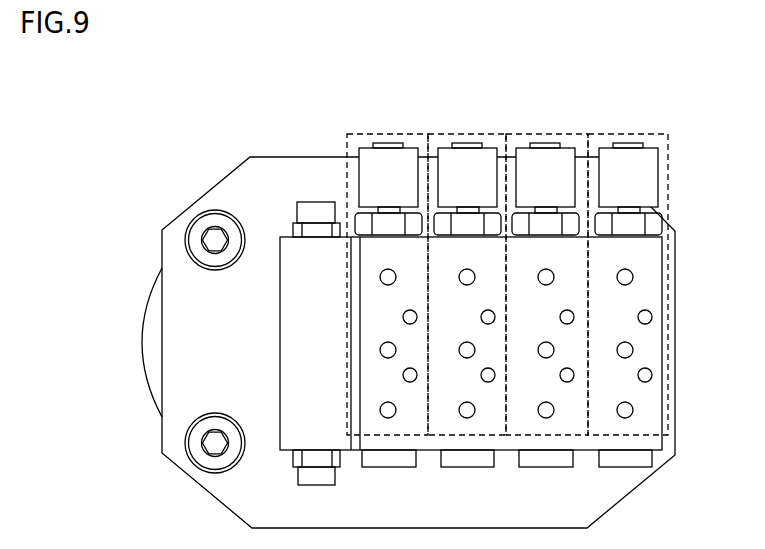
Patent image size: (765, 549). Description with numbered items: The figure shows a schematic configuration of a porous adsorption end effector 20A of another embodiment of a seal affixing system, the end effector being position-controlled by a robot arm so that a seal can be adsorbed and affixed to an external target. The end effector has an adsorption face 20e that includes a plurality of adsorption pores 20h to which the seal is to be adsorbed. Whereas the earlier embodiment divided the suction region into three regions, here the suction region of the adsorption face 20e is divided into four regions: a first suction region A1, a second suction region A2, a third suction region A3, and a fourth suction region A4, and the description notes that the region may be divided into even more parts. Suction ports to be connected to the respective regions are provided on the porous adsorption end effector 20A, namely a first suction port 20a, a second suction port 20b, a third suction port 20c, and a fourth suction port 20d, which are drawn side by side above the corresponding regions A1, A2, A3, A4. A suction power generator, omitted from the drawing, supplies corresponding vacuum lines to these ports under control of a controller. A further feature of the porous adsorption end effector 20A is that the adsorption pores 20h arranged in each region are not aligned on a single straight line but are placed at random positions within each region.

The porous adsorption end effector 20A is at (188, 332).
The first suction port 20a is at (613, 166).
The second suction port 20b is at (522, 164).
The third suction port 20c is at (445, 164).
The fourth suction port 20d is at (368, 164).
The adsorption face 20e is at (643, 260).
The adsorption pores 20h is at (631, 284).
The first suction region A1 is at (632, 133).
The second suction region A2 is at (552, 133).
The third suction region A3 is at (473, 133).
The fourth suction region A4 is at (395, 133).